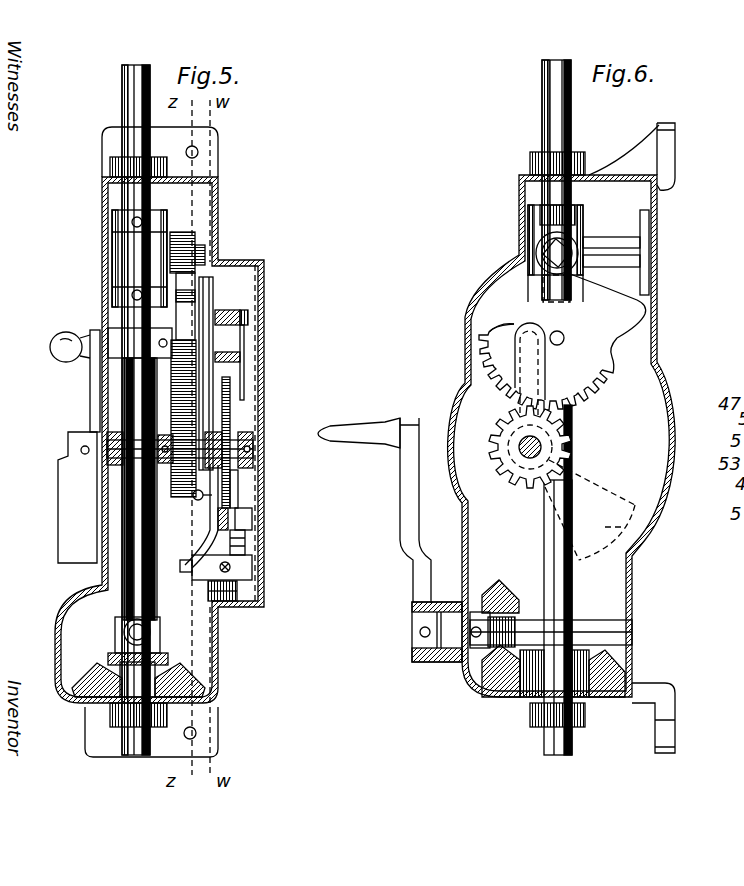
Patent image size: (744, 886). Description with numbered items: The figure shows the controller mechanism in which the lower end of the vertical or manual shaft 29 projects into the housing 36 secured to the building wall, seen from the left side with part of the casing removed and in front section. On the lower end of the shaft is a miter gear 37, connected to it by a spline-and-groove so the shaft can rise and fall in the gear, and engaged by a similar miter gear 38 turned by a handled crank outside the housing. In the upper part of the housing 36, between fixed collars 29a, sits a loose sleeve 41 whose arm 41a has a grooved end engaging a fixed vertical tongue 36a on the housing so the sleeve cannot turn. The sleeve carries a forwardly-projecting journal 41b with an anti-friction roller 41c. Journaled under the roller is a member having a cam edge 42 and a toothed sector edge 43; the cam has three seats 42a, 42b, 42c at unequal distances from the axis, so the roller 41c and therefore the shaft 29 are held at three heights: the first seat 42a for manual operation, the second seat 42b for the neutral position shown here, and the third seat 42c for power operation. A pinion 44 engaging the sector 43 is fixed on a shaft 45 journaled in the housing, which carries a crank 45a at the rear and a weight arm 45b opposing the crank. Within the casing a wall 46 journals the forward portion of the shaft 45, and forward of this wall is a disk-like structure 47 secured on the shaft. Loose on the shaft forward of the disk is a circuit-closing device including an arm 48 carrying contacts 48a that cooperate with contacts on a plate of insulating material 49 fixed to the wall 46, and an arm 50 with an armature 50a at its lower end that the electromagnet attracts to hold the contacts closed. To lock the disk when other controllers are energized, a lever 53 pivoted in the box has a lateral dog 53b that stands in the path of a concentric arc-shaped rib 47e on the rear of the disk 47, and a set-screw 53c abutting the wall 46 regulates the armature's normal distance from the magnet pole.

In FIG. 5, the vertical or manual shaft 29 is at (124, 103).
In FIG. 6, the vertical or manual shaft 29 is at (542, 105).
In FIG. 5, the fixed collars 29a is at (125, 222).
In FIG. 5, the housing 36 is at (217, 224).
In FIG. 6, the housing 36 is at (465, 337).
In FIG. 6, the fixed vertical tongue 36a is at (650, 280).
In FIG. 5, the miter gear 37 is at (185, 678).
In FIG. 6, the miter gear 38 is at (507, 578).
In FIG. 5, the loose sleeve 41 is at (125, 257).
In FIG. 6, the arm of the sleeve 41a is at (612, 242).
In FIG. 6, the forwardly-projecting journal 41b is at (545, 243).
In FIG. 5, the anti-friction roller 41c is at (182, 257).
In FIG. 6, the anti-friction roller 41c is at (537, 250).
In FIG. 6, the cam edge 42 is at (612, 340).
In FIG. 6, the first seat 42a is at (517, 323).
In FIG. 6, the second seat 42b is at (645, 303).
In FIG. 6, the third seat 42c is at (646, 313).
In FIG. 6, the toothed sector edge 43 is at (502, 355).
In FIG. 6, the pinion 44 is at (517, 480).
In FIG. 5, the shaft 45 is at (251, 437).
In FIG. 6, the shaft 45 is at (541, 448).
In FIG. 5, the crank 45a is at (97, 395).
In FIG. 5, the weight arm 45b is at (70, 492).
In FIG. 6, the weight arm 45b is at (640, 530).
In FIG. 5, the wall 46 is at (200, 380).
In FIG. 5, the disk-like structure 47 is at (227, 393).
In FIG. 5, the concentric arc-shaped rib 47e is at (222, 483).
In FIG. 5, the arm 48 is at (243, 318).
In FIG. 5, the circuit-closing contacts 48a is at (245, 358).
In FIG. 5, the plate of insulating material 49 is at (213, 300).
In FIG. 5, the arm 50 is at (252, 518).
In FIG. 5, the armature 50a is at (258, 535).
In FIG. 5, the lever 53 is at (212, 520).
In FIG. 5, the lateral dog or projection 53b is at (249, 463).
In FIG. 5, the set-screw 53c is at (197, 494).